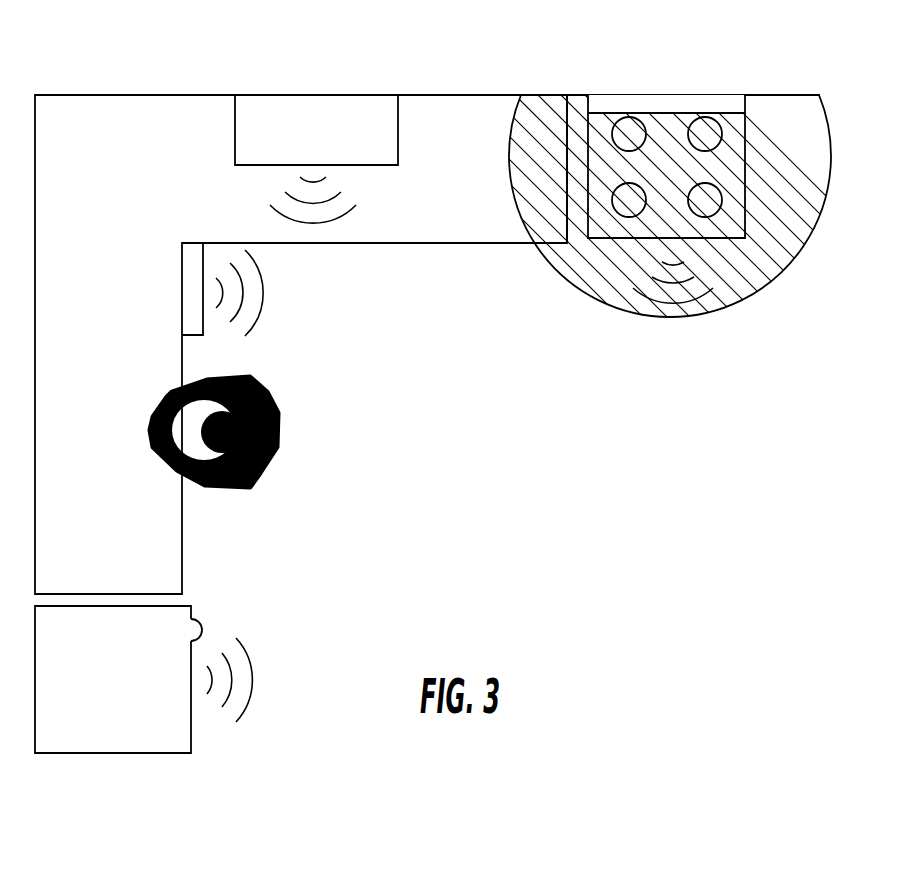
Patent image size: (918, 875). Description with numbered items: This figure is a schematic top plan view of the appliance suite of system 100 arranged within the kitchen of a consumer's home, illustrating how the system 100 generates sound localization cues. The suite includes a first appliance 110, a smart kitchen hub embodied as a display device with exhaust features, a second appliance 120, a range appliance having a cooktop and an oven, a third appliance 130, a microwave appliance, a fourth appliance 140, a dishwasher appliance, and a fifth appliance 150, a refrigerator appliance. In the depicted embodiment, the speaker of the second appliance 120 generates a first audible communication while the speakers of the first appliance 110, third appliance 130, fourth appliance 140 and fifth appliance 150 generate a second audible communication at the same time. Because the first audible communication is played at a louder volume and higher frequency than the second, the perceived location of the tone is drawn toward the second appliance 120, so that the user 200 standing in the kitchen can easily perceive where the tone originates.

The system 100 is at (115, 62).
The first appliance 110 is at (746, 97).
The second appliance 120 is at (741, 244).
The third appliance 130 is at (335, 145).
The fourth appliance 140 is at (192, 258).
The fifth appliance 150 is at (132, 695).
The user 200 is at (268, 392).